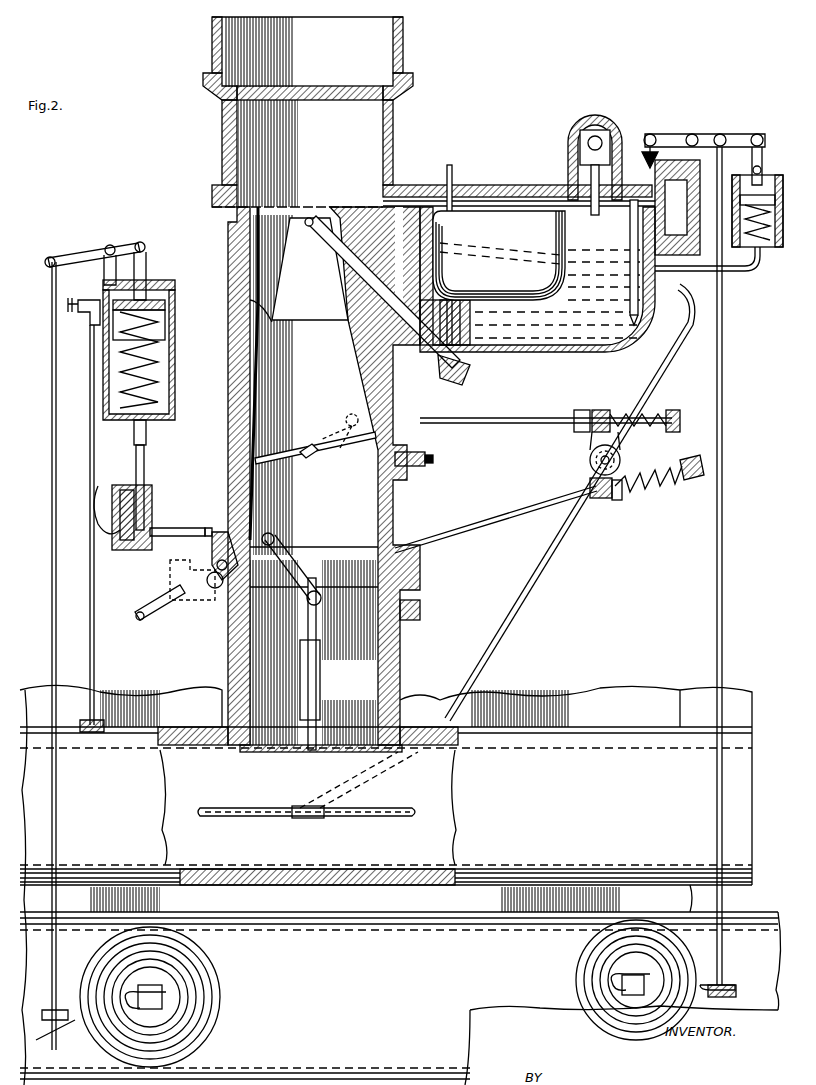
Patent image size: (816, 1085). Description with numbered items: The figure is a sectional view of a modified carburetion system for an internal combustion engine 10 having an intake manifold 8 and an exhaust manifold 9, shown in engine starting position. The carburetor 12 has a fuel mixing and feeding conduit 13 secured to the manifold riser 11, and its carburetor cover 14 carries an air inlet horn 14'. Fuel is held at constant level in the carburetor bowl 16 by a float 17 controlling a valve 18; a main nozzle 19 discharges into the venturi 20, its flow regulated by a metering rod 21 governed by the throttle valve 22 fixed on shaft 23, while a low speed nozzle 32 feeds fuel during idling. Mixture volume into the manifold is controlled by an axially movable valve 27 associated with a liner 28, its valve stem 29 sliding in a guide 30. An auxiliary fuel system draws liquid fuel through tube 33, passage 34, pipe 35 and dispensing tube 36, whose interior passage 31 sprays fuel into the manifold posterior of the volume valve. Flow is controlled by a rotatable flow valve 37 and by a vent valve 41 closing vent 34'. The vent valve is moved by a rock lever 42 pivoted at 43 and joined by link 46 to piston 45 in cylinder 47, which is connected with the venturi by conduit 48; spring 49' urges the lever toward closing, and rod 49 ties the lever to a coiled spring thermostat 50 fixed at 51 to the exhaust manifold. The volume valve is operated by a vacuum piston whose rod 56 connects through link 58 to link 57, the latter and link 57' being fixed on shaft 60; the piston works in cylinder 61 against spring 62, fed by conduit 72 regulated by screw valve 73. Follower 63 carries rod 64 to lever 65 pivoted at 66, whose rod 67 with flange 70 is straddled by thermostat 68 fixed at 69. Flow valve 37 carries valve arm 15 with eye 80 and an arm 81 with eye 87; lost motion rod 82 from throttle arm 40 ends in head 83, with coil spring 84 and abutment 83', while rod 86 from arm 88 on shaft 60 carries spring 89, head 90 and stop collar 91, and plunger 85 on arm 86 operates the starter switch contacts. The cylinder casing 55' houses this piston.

The intake manifold 8 is at (192, 735).
The exhaust manifold 9 is at (322, 930).
The internal combustion engine 10 is at (560, 690).
The manifold riser 11 is at (398, 650).
The carburetor 12 is at (226, 252).
The fuel mixing and feeding conduit 13 is at (228, 408).
The carburetor cover 14 is at (433, 187).
The air inlet horn 14' is at (311, 112).
The valve arm 15 is at (590, 456).
The carburetor bowl 16 is at (530, 346).
The float 17 is at (565, 232).
The valve 18 is at (568, 186).
The main nozzle 19 is at (330, 270).
The venturi 20 is at (312, 218).
The metering rod 21 is at (445, 180).
The throttle valve 22 is at (355, 442).
The throttle valve shaft 23 is at (310, 446).
The volume control valve 27 is at (285, 752).
The liner 28 is at (376, 608).
The valve stem 29 is at (316, 628).
The guide 30 is at (320, 660).
The interior passage 31 is at (228, 802).
The low speed nozzle 32 is at (395, 462).
The tube 33 is at (640, 290).
The passage 34 is at (682, 207).
The vent 34' is at (639, 155).
The pipe 35 is at (548, 570).
The dispensing tube 36 is at (372, 816).
The flow valve 37 is at (620, 458).
The throttle valve arm 40 is at (339, 420).
The vent valve 41 is at (650, 134).
The rock lever 42 is at (726, 136).
The pivot 43 is at (692, 134).
The piston 45 is at (780, 178).
The link 46 is at (763, 144).
The cylinder 47 is at (764, 284).
The conduit 48 is at (700, 272).
The rod 49 is at (708, 572).
The spring 49' is at (774, 267).
The coiled spring thermostat 50 is at (578, 960).
The fixed end 51 is at (634, 978).
The cylinder 55' is at (150, 355).
The rod 56 is at (146, 428).
The link 57 is at (160, 612).
The link 57' is at (299, 553).
The link 58 is at (144, 458).
The shaft 60 is at (194, 600).
The cylinder 61 is at (170, 348).
The spring 62 is at (166, 318).
The follower 63 is at (141, 277).
The rod 64 is at (146, 258).
The lever 65 is at (90, 250).
The pivot 66 is at (110, 245).
The rod 67 is at (50, 388).
The coiled spring thermostat 68 is at (216, 978).
The fixed end 69 is at (145, 1007).
The flange 70 is at (46, 1010).
The conduit 72 is at (88, 418).
The screw valve 73 is at (83, 319).
The eye 80 is at (380, 463).
The arm 81 is at (590, 484).
The lost motion rod 82 is at (530, 416).
The head 83 is at (430, 451).
The abutment 83' is at (579, 411).
The coil spring 84 is at (415, 463).
The plunger 85 is at (197, 520).
The rod 86 is at (500, 520).
The eye 87 is at (618, 500).
The arm 88 is at (214, 600).
The spring 89 is at (656, 486).
The head 90 is at (694, 478).
The stop collar 91 is at (602, 500).